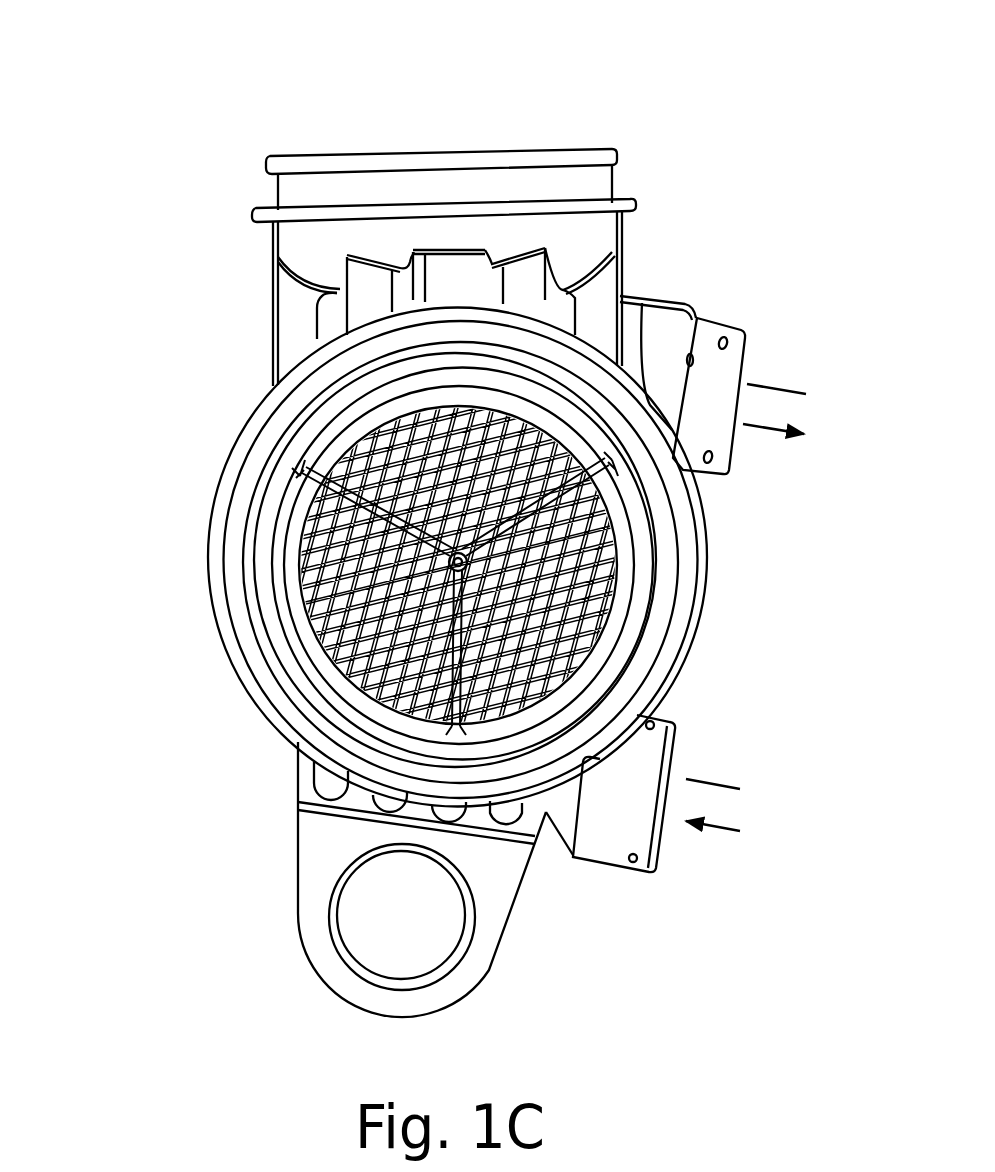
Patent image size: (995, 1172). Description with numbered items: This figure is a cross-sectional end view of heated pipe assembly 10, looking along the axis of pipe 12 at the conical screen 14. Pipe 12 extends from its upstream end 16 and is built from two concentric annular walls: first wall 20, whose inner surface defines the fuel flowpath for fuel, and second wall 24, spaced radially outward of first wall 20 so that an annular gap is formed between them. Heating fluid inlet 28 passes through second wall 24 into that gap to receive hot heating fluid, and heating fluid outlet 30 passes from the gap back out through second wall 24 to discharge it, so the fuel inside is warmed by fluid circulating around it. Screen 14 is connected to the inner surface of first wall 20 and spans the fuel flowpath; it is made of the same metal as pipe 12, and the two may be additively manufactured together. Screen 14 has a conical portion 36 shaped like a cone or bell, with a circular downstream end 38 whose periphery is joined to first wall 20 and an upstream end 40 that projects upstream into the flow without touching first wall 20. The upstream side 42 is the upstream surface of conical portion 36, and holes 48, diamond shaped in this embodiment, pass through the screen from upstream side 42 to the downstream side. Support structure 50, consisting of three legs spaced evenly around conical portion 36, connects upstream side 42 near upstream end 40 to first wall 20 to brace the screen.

The heated pipe assembly 10 is at (121, 105).
The pipe 12 is at (748, 516).
The screen 14 is at (612, 596).
The upstream end 16 is at (275, 596).
The first wall 20 is at (283, 462).
The second wall 24 is at (207, 487).
The heating fluid inlet 28 is at (657, 847).
The heating fluid outlet 30 is at (743, 353).
The conical portion 36 is at (553, 658).
The downstream end 38 is at (298, 412).
The upstream end 40 is at (353, 687).
The upstream side 42 is at (330, 669).
The holes 48 is at (318, 565).
The support structure 50 is at (462, 730).